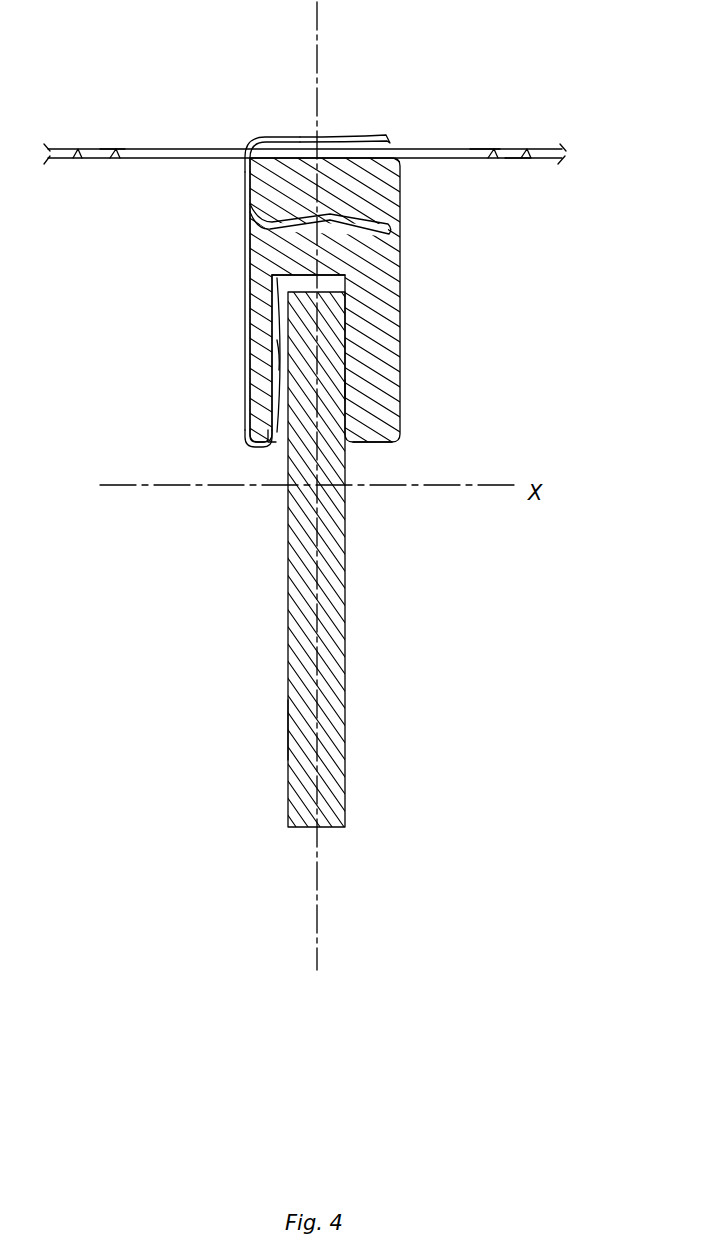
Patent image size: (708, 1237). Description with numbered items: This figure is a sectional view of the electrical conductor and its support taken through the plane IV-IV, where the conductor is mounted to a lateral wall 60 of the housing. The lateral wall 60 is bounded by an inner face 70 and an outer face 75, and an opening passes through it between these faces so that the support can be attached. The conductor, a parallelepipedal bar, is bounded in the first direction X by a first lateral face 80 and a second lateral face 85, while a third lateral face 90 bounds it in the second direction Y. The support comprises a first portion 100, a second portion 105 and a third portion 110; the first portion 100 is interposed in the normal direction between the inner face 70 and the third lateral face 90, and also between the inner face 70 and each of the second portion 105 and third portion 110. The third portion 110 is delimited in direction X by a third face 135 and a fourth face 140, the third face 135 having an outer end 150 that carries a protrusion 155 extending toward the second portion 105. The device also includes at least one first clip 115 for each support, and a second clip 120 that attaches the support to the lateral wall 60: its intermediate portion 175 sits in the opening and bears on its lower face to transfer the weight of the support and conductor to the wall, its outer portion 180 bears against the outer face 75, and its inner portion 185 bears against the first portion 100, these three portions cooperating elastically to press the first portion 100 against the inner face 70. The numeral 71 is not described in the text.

The lateral wall 60 is at (515, 157).
The inner face 70 is at (524, 170).
The upper surface of panel 71 is at (108, 140).
The outer face 75 is at (486, 138).
The first lateral face 80 is at (352, 732).
The second lateral face 85 is at (280, 732).
The third lateral face 90 is at (284, 273).
The first portion 100 is at (381, 183).
The second portion 105 is at (373, 428).
The third portion 110 is at (265, 412).
The first clip 115 is at (272, 400).
The second clip 120 is at (284, 128).
The third face 135 is at (296, 352).
The fourth face 140 is at (305, 238).
The outer end 150 is at (277, 452).
The protrusion 155 is at (352, 382).
The intermediate portion 175 is at (244, 182).
The outer portion 180 is at (300, 130).
The inner portion 185 is at (315, 246).